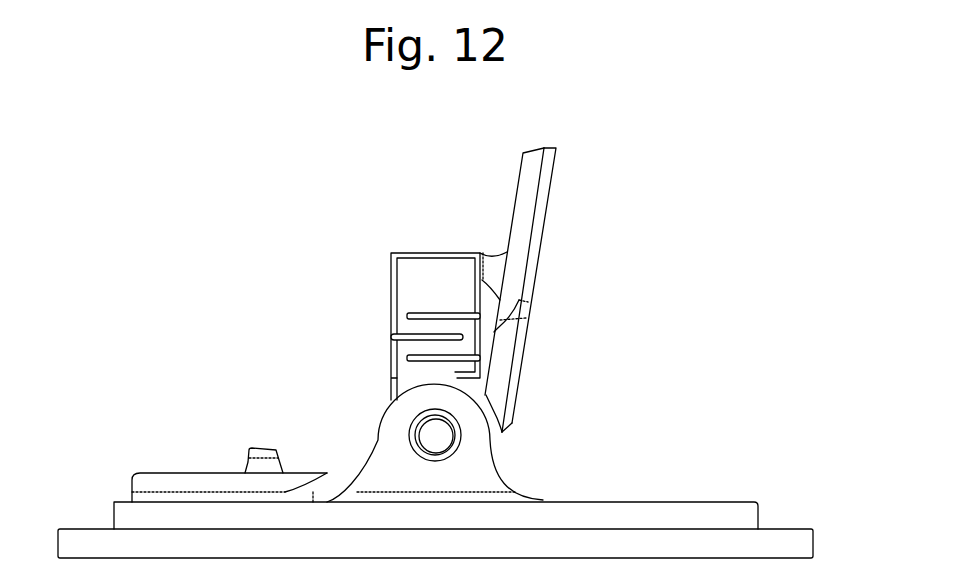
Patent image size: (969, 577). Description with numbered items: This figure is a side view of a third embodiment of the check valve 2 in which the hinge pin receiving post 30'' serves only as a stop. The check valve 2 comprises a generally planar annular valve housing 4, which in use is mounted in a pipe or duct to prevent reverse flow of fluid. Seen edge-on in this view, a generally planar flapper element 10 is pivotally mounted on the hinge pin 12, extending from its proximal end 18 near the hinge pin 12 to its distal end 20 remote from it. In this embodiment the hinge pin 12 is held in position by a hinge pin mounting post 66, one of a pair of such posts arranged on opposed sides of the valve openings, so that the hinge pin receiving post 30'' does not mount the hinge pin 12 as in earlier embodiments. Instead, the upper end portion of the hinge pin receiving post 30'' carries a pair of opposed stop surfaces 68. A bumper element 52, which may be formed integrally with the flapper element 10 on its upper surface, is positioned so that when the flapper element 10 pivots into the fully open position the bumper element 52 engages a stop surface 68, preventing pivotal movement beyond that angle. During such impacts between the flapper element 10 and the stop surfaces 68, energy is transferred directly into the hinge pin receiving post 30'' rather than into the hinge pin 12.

The check valve 2 is at (158, 186).
The valve housing 4 is at (793, 529).
The flapper element 10 is at (525, 177).
The hinge pin 12 is at (447, 437).
The proximal end 18 is at (505, 432).
The distal end 20 is at (556, 148).
The hinge pin receiving post 30'' is at (449, 276).
The bumper element 52 is at (260, 455).
The hinge pin mounting post 66 is at (398, 453).
The stop surface 68 is at (390, 276).